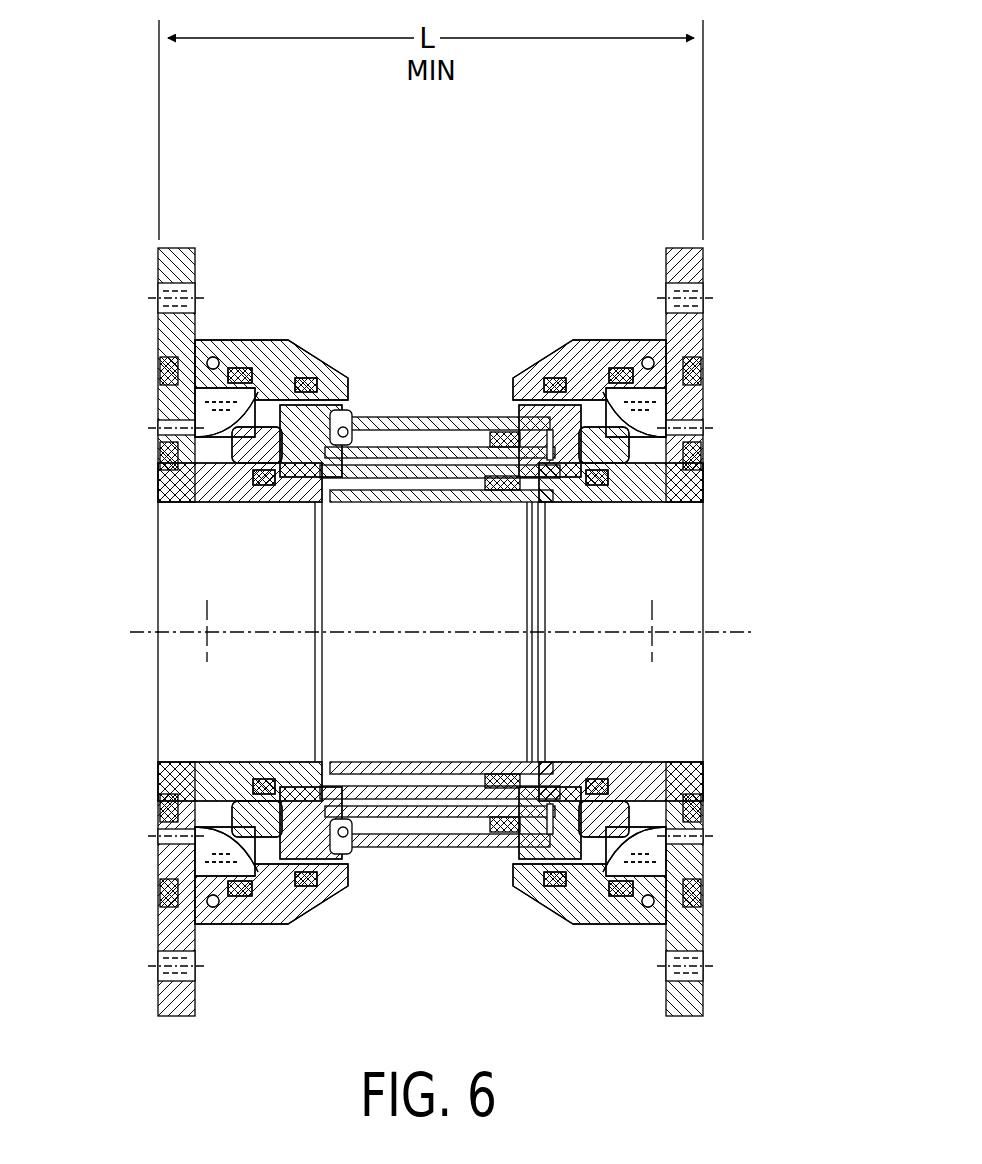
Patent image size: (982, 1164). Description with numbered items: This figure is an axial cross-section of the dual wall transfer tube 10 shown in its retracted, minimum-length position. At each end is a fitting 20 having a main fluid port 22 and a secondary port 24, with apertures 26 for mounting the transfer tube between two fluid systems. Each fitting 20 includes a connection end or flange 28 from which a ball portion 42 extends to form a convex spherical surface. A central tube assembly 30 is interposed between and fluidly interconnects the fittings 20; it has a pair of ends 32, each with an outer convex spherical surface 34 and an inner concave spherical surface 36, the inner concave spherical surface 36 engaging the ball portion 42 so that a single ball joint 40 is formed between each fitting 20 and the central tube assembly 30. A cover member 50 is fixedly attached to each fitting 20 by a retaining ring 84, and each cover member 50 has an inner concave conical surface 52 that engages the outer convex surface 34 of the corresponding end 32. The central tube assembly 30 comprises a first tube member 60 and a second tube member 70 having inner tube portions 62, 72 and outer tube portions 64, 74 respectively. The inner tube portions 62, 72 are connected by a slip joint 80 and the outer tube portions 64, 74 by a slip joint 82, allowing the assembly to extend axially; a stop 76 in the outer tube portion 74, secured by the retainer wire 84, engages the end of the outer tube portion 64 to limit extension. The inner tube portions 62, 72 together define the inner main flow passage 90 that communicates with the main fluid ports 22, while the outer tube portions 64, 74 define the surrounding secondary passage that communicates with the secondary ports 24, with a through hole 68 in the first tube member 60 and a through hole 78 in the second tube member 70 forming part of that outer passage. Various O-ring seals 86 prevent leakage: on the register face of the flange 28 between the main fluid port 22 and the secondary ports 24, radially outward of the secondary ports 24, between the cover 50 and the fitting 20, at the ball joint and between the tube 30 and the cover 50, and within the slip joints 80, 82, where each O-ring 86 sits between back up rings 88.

The dual wall transfer tube 10 is at (738, 219).
The fitting 20 is at (155, 999).
The main fluid port 22 is at (155, 629).
The secondary port 24 is at (157, 429).
The aperture 26 is at (201, 296).
The flange 28 is at (175, 247).
The central tube assembly 30 is at (437, 856).
The end 32 is at (170, 488).
The outer convex spherical surface 34 is at (305, 378).
The inner concave spherical surface 36 is at (200, 505).
The ball joint 40 is at (262, 929).
The ball portion 42 is at (295, 482).
The cover member 50 is at (268, 340).
The inner concave conical surface 52 is at (222, 437).
The first tube member 60 is at (310, 765).
The inner tube portion 62 is at (452, 500).
The outer tube portion 64 is at (372, 470).
The through hole 68 is at (276, 404).
The second tube member 70 is at (635, 803).
The inner tube portion 72 is at (414, 480).
The outer tube portion 74 is at (375, 415).
The stop 76 is at (350, 842).
The through hole 78 is at (588, 847).
The slip joint 80 is at (447, 455).
The slip joint 82 is at (492, 437).
The retaining ring 84 is at (652, 903).
The O-ring seal 86 is at (505, 772).
The back up ring 88 is at (483, 770).
The inner main flow passage 90 is at (392, 606).